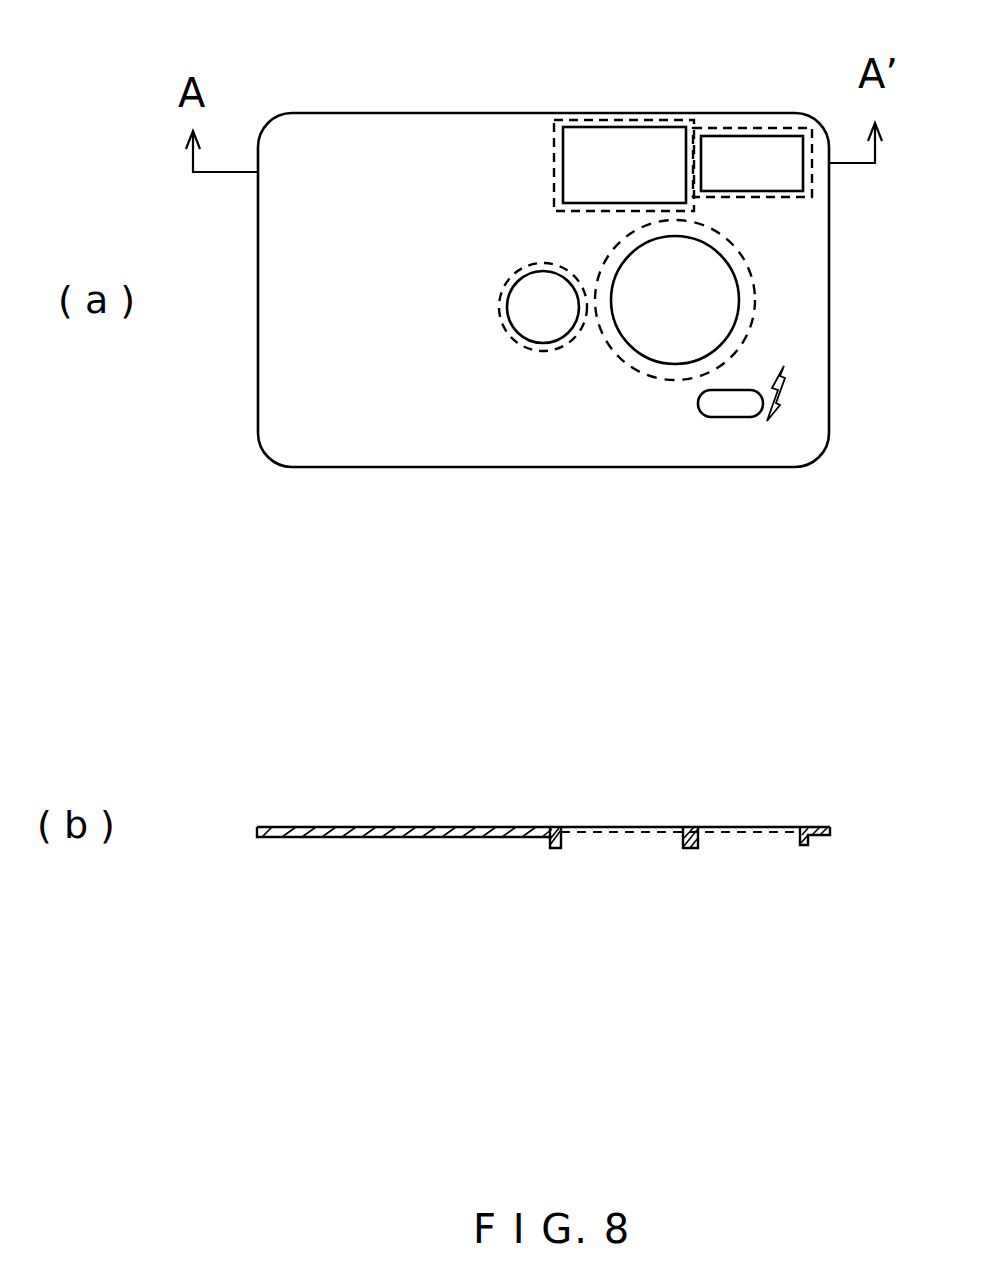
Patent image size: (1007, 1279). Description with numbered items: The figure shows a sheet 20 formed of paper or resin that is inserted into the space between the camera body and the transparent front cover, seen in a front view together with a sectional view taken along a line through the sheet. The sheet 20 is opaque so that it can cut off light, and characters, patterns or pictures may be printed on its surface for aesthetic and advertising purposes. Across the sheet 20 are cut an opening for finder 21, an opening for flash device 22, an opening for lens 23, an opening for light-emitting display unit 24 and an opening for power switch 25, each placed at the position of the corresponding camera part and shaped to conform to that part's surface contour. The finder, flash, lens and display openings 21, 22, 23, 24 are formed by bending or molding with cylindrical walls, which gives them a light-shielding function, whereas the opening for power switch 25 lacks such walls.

The sheet formed of paper or resin 20 is at (372, 113).
The opening for finder 21 is at (619, 142).
The opening for flash device 22 is at (772, 150).
The opening for lens 23 is at (545, 327).
The opening for light-emitting display unit 24 is at (662, 340).
The opening for power switch 25 is at (743, 410).